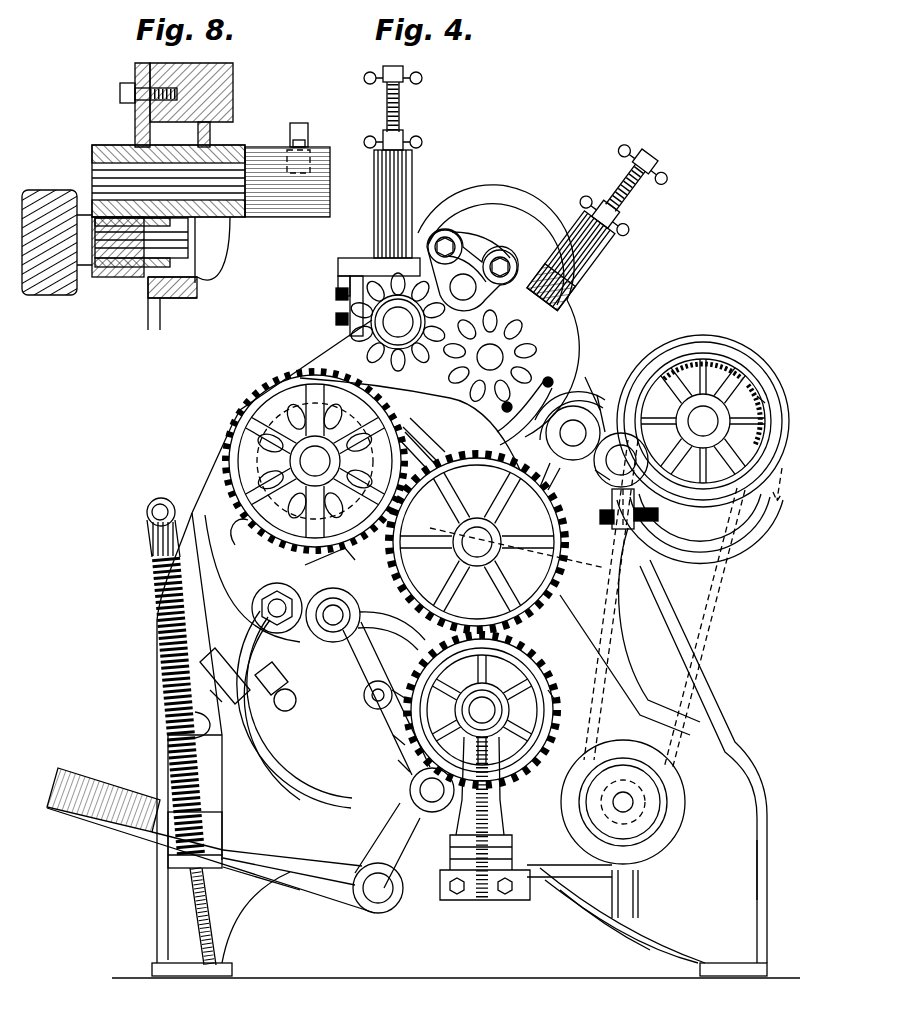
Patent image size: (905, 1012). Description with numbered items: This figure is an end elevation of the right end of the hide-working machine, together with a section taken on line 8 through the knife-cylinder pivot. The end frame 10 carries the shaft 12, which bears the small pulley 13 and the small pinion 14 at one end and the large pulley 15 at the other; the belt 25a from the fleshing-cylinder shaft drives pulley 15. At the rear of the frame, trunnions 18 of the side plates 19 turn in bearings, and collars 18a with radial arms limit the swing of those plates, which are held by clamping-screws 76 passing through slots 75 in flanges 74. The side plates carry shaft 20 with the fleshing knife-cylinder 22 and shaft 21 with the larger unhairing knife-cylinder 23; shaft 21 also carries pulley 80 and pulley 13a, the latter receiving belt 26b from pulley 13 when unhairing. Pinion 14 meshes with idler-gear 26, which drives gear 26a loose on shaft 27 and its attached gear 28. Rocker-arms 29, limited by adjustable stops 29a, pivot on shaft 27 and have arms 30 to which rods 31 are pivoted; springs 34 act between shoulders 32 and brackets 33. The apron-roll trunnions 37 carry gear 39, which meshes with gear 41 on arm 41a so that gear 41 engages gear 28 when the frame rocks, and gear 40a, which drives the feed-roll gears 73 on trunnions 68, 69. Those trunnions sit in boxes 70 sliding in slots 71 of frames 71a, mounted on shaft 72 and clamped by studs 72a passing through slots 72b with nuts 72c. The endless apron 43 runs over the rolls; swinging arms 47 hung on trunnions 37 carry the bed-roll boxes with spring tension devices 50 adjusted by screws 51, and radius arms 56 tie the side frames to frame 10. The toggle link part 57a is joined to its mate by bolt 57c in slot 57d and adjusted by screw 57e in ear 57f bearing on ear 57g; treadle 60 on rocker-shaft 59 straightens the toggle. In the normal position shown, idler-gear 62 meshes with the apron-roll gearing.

In FIG. 4, the section line 8 is at (735, 487).
In FIG. 8, the end frame 10 is at (230, 80).
In FIG. 4, the end frame 10 is at (283, 807).
In FIG. 4, the shaft 12 is at (626, 798).
In FIG. 4, the small pulley 13 is at (660, 790).
In FIG. 4, the pulley 13a is at (762, 387).
In FIG. 4, the small pinion 14 is at (718, 870).
In FIG. 4, the large pulley 15 is at (568, 915).
In FIG. 8, the trunnion 18 is at (214, 172).
In FIG. 4, the trunnion 18 is at (612, 468).
In FIG. 8, the collar 18a is at (288, 212).
In FIG. 4, the collar 18a is at (630, 580).
In FIG. 8, the side plate 19 is at (112, 270).
In FIG. 4, the side plate 19 is at (613, 397).
In FIG. 8, the shaft 20 is at (133, 262).
In FIG. 4, the shaft 20 is at (573, 433).
In FIG. 4, the shaft 21 is at (705, 420).
In FIG. 8, the knife-cylinder 22 is at (56, 288).
In FIG. 4, the knife-cylinder 22 is at (572, 395).
In FIG. 4, the knife-cylinder 23 is at (697, 362).
In FIG. 4, the belt 25a is at (700, 660).
In FIG. 4, the idler-gear 26 is at (590, 745).
In FIG. 4, the gear 26a is at (555, 690).
In FIG. 4, the belt 26b is at (720, 597).
In FIG. 4, the shaft 27 is at (482, 710).
In FIG. 4, the gear 28 is at (540, 653).
In FIG. 4, the rocker-arm 29 is at (360, 612).
In FIG. 4, the adjustable stop 29a is at (225, 678).
In FIG. 4, the arm 30 is at (225, 669).
In FIG. 4, the rod 31 is at (210, 892).
In FIG. 4, the shoulder 32 is at (153, 560).
In FIG. 4, the bracket 33 is at (225, 858).
In FIG. 4, the spring 34 is at (192, 728).
In FIG. 4, the trunnion 37 is at (315, 461).
In FIG. 4, the gear 39 is at (275, 384).
In FIG. 4, the gear 40a is at (253, 407).
In FIG. 4, the gear 41 is at (540, 558).
In FIG. 4, the arm 41a is at (504, 542).
In FIG. 4, the endless apron 43 is at (407, 427).
In FIG. 4, the swinging arm 47 is at (452, 432).
In FIG. 4, the spring tension device 50 is at (330, 558).
In FIG. 4, the screw 51 is at (290, 692).
In FIG. 4, the radius arm 56 is at (391, 631).
In FIG. 4, the link part 57a is at (352, 660).
In FIG. 4, the bolt 57c is at (392, 700).
In FIG. 4, the slot 57d is at (364, 698).
In FIG. 4, the adjusting-screw 57e is at (393, 740).
In FIG. 4, the ear 57f is at (400, 765).
In FIG. 4, the ear 57g is at (410, 790).
In FIG. 4, the rocker-shaft 59 is at (375, 903).
In FIG. 4, the treadle 60 is at (80, 792).
In FIG. 4, the idler-gear 62 is at (243, 540).
In FIG. 4, the trunnion 68 is at (397, 330).
In FIG. 4, the trunnion 69 is at (480, 362).
In FIG. 4, the box 70 is at (336, 294).
In FIG. 4, the slot 71 is at (378, 268).
In FIG. 4, the frame 71a is at (345, 280).
In FIG. 4, the shaft 72 is at (463, 287).
In FIG. 4, the stud 72a is at (447, 247).
In FIG. 4, the slot 72b is at (477, 243).
In FIG. 4, the clamping-nut 72c is at (440, 240).
In FIG. 4, the gear 73 is at (336, 322).
In FIG. 4, the flange 74 is at (707, 528).
In FIG. 4, the slot 75 is at (677, 530).
In FIG. 8, the clamping-screw 76 is at (120, 94).
In FIG. 4, the pulley 80 is at (770, 400).